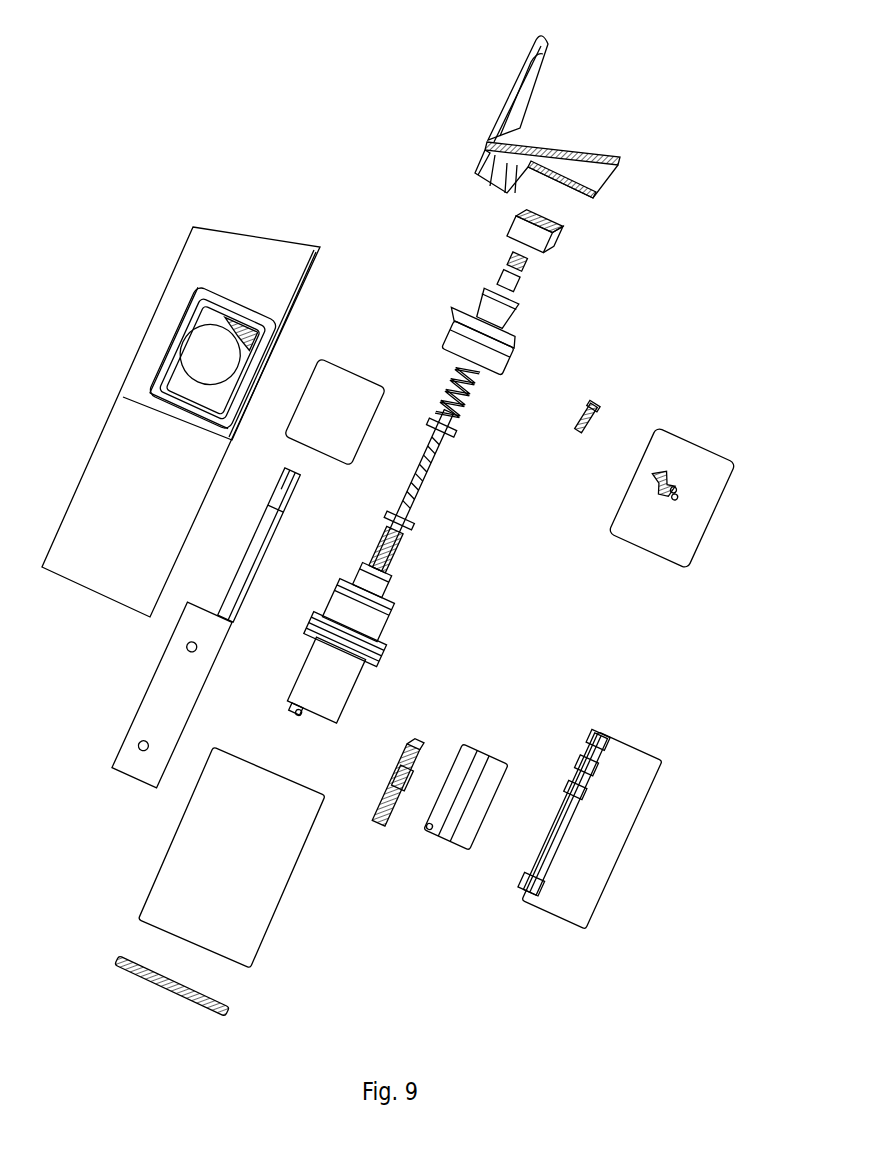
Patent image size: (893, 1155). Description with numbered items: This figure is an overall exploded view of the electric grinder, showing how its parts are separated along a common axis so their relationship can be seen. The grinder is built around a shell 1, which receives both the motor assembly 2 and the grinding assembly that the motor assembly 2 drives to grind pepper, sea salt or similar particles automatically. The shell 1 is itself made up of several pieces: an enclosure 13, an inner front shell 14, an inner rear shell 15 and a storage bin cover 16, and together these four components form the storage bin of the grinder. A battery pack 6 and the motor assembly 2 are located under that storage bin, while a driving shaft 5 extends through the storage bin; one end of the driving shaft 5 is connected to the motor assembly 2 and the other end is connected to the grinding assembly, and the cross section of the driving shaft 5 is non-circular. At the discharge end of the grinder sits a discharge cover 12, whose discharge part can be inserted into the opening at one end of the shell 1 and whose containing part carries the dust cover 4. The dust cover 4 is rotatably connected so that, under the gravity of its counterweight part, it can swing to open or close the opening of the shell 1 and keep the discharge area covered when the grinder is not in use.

The shell 1 is at (254, 934).
The motor assembly 2 is at (380, 648).
The dust cover 4 is at (512, 78).
The driving shaft 5 is at (414, 506).
The battery pack 6 is at (480, 758).
The discharge cover 12 is at (592, 167).
The enclosure 13 is at (145, 340).
The inner front shell 14 is at (158, 702).
The inner rear shell 15 is at (632, 763).
The storage bin cover 16 is at (708, 462).